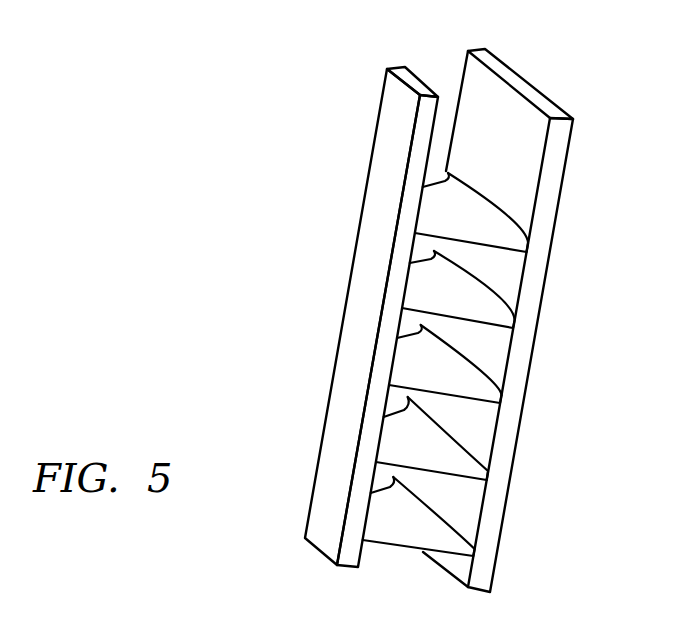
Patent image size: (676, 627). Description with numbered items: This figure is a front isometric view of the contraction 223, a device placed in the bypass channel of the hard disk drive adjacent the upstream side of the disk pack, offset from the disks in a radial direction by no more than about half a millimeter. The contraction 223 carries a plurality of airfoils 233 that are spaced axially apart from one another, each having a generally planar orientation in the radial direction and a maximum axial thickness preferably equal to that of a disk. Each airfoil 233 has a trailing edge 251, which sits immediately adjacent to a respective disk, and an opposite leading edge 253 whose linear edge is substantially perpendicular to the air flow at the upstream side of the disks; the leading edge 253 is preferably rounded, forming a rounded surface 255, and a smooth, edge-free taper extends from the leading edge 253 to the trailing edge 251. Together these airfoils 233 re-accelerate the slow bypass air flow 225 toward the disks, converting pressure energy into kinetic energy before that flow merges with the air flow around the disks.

The contraction 223 is at (272, 140).
The slow bypass air flow 225 is at (461, 510).
The airfoils 233 is at (410, 433).
The trailing edge 251 is at (447, 170).
The leading edge 253 is at (475, 400).
The rounded surface 255 is at (484, 385).